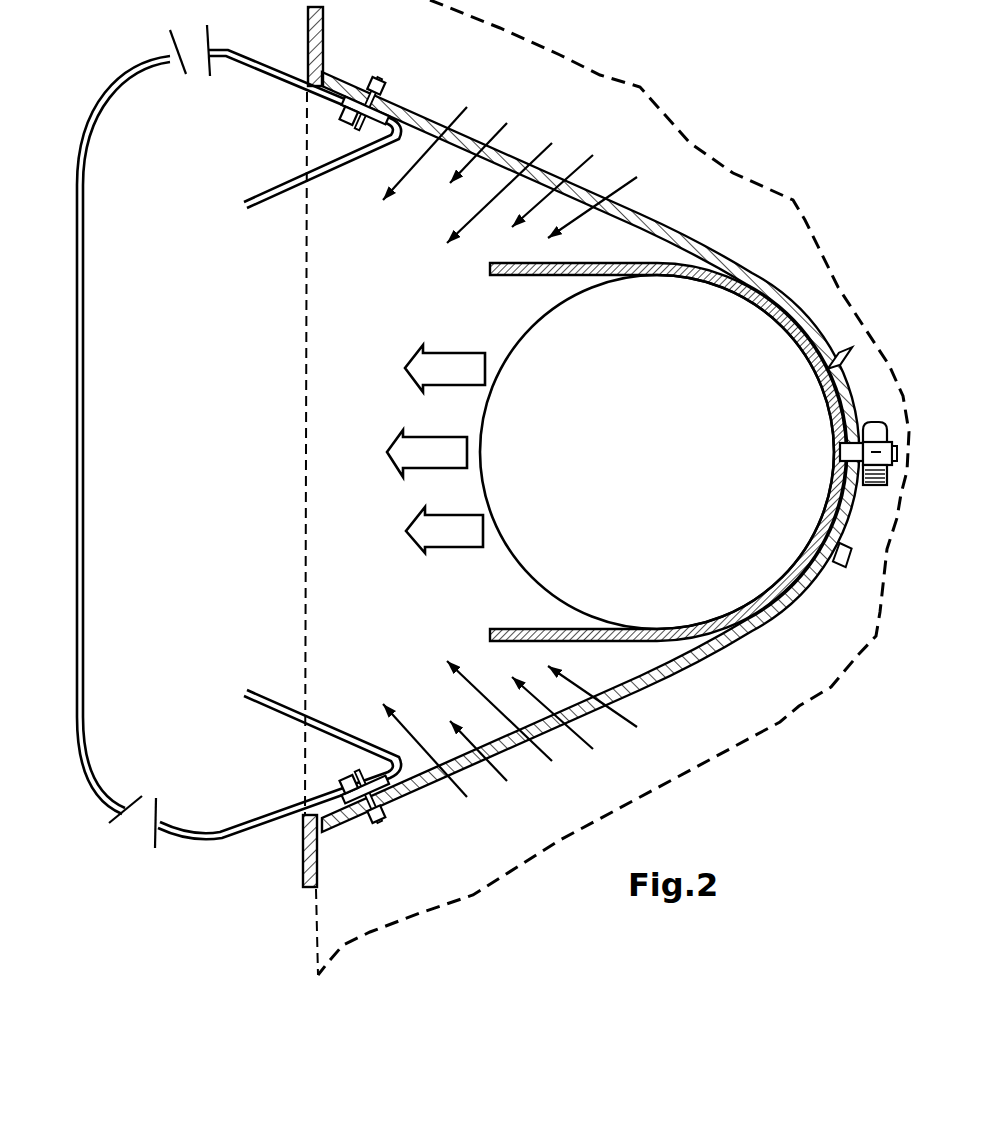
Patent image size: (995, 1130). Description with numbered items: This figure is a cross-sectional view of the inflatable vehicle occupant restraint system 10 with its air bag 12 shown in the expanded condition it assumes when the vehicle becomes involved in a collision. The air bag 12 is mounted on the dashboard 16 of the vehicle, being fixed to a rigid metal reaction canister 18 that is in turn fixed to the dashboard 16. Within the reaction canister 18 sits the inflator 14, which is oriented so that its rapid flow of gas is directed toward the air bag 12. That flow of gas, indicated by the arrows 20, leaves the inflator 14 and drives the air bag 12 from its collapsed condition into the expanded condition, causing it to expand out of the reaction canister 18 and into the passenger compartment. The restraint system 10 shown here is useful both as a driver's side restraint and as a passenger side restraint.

The inflatable vehicle occupant restraint system 10 is at (680, 166).
The air bag 12 is at (82, 587).
The inflator 14 is at (580, 608).
The dashboard 16 is at (316, 913).
The reaction canister 18 is at (668, 228).
The arrows 20 is at (442, 515).